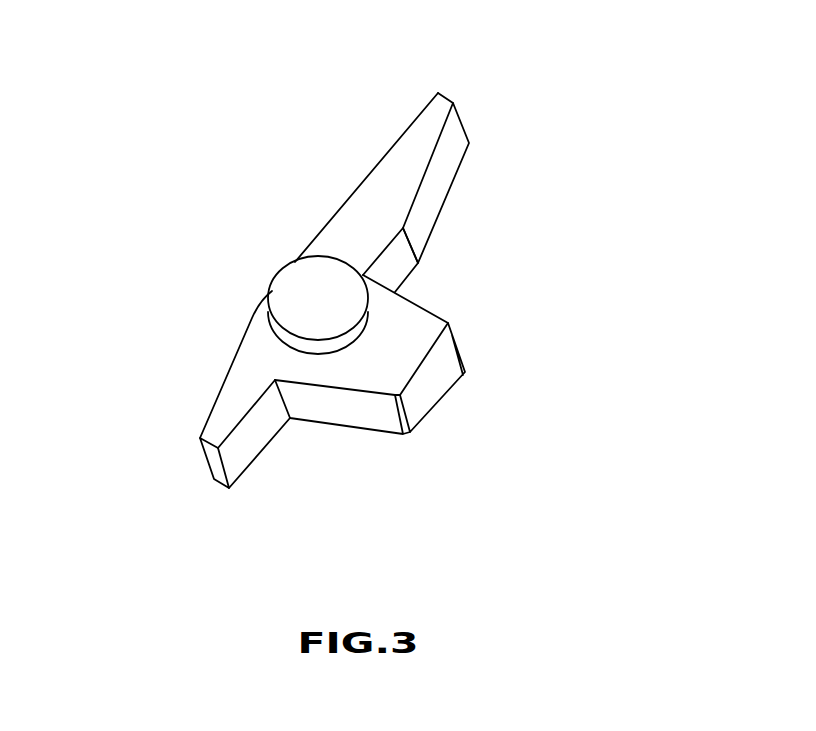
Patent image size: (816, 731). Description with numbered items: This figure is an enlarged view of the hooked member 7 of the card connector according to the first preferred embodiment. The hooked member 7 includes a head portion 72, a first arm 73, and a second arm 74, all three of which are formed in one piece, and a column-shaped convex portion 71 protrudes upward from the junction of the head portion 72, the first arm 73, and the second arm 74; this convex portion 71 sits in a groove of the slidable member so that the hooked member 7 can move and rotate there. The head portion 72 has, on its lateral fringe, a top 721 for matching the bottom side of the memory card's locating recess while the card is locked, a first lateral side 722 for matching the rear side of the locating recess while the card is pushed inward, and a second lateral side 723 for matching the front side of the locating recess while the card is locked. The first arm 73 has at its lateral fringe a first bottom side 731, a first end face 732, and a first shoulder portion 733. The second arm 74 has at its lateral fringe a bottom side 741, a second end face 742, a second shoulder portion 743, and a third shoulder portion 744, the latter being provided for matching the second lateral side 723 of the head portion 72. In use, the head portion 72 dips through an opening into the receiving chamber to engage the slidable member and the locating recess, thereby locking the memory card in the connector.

The hooked member 7 is at (527, 165).
The column-shaped convex portion 71 is at (308, 307).
The head portion 72 is at (420, 332).
The top 721 is at (437, 378).
The first lateral side 722 is at (330, 410).
The second lateral side 723 is at (417, 303).
The first arm 73 is at (233, 400).
The first bottom side 731 is at (210, 413).
The first end face 732 is at (217, 467).
The first shoulder portion 733 is at (248, 438).
The second arm 74 is at (385, 193).
The bottom side 741 is at (325, 225).
The second end face 742 is at (450, 102).
The second shoulder portion 743 is at (441, 168).
The third shoulder portion 744 is at (398, 255).